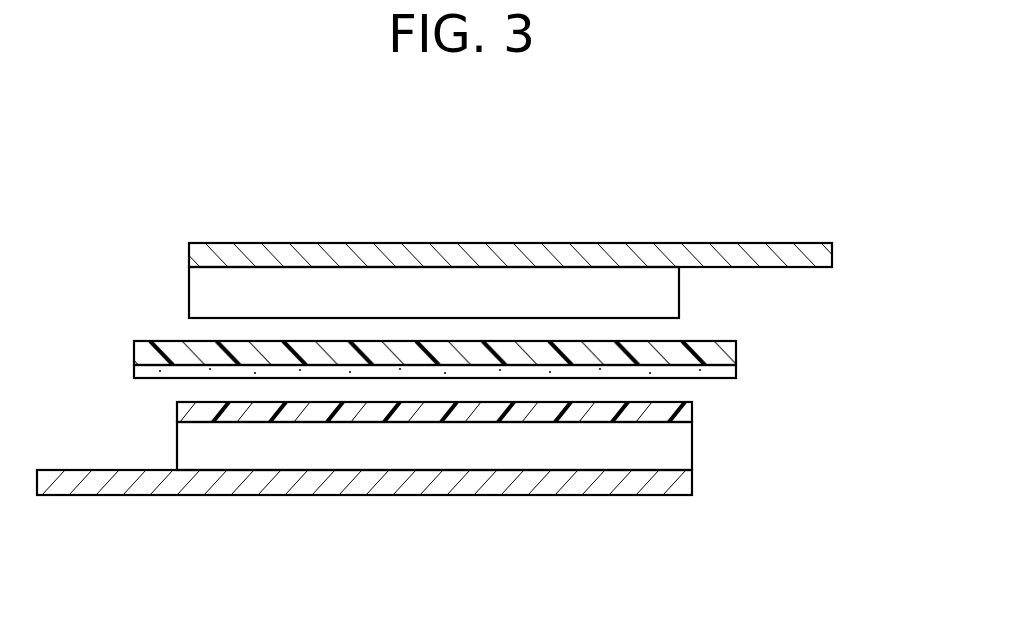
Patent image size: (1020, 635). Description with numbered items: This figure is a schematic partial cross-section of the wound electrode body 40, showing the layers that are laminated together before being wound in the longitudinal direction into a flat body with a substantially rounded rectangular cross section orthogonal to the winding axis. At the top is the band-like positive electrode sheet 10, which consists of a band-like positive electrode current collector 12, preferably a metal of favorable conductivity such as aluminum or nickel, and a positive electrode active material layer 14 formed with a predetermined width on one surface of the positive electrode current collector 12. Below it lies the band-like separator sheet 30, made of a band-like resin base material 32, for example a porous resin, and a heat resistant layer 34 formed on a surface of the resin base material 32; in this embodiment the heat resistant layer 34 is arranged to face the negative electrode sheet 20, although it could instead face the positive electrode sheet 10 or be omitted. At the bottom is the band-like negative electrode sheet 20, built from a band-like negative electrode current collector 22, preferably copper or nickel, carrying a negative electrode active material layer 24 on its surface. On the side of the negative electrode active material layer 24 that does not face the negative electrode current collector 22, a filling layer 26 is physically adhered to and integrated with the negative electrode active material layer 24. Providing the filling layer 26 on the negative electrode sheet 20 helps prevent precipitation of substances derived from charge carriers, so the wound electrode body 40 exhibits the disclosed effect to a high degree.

The positive electrode sheet 10 is at (100, 238).
The positive electrode current collector 12 is at (189, 251).
The positive electrode active material layer 14 is at (188, 287).
The negative electrode sheet 20 is at (782, 447).
The negative electrode current collector 22 is at (690, 490).
The negative electrode active material layer 24 is at (690, 453).
The filling layer 26 is at (690, 416).
The separator sheet 30 is at (837, 320).
The resin base material 32 is at (740, 352).
The heat resistant layer 34 is at (740, 372).
The wound electrode body 40 is at (765, 180).